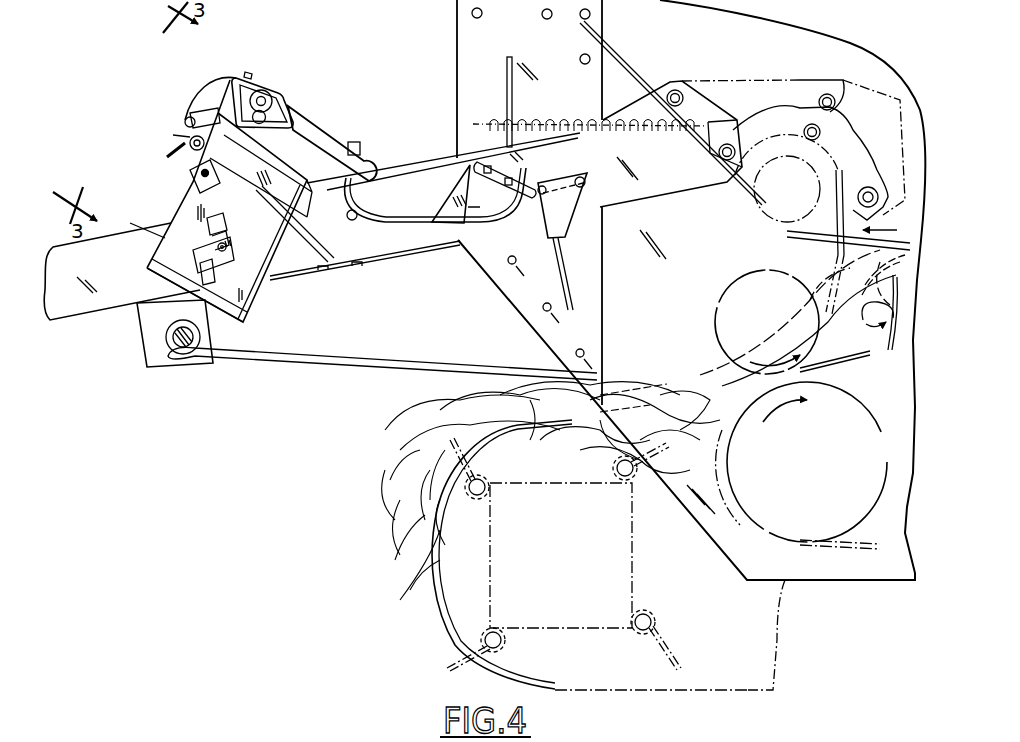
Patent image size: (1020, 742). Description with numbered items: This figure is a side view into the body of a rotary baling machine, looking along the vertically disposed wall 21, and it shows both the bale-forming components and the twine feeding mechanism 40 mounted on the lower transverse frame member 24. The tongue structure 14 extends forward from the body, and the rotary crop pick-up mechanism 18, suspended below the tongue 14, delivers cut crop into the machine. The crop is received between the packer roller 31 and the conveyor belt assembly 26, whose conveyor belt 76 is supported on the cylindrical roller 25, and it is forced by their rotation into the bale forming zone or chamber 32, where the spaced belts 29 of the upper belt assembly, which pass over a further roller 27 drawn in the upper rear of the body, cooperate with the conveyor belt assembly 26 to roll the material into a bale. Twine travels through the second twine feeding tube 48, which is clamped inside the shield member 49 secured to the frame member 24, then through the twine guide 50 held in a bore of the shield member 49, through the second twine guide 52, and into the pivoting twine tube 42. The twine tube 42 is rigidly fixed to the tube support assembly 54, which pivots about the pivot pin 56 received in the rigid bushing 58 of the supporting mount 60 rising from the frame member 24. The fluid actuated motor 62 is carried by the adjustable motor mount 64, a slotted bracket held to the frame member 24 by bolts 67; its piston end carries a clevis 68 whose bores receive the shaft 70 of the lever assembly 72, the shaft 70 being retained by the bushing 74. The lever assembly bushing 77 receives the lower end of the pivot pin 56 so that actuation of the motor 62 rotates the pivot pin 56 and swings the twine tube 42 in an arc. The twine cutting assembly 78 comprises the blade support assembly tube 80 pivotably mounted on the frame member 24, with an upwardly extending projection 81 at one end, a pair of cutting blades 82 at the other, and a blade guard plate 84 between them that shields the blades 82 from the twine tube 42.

The tongue structure 14 is at (97, 303).
The rotary crop pick-up mechanism 18 is at (427, 543).
The vertically disposed wall 21 is at (456, 27).
The lower transverse frame member 24 is at (299, 279).
The cylindrical roller 25 is at (832, 462).
The conveyor belt assembly 26 is at (737, 523).
The roller 27 is at (800, 201).
The spaced belts 29 is at (807, 227).
The packer roller 31 is at (775, 337).
The bale forming zone or chamber 32 is at (889, 340).
The twine feeding mechanism 40 is at (308, 120).
The pivoting twine tube 42 is at (336, 148).
The second twine feeding tube 48 is at (169, 150).
The shield member 49 is at (189, 140).
The twine guide 50 is at (185, 126).
The second twine guide 52 is at (259, 90).
The tube support assembly 54 is at (296, 100).
The pivot pin 56 is at (190, 186).
The rigid bushing 58 is at (214, 125).
The supporting mount 60 is at (273, 172).
The fluid actuated motor 62 is at (250, 320).
The adjustable motor mount 64 is at (279, 284).
The bolts 67 is at (357, 270).
The clevis 68 is at (192, 252).
The shaft 70 is at (197, 280).
The lever assembly 72 is at (192, 178).
The bushing 74 is at (208, 225).
The conveyor belt 76 is at (838, 551).
The lever assembly bushing 77 is at (200, 172).
The twine cutting assembly 78 is at (451, 223).
The blade support assembly tube 80 is at (417, 223).
The upwardly extending projection 81 is at (361, 148).
The cutting blades 82 is at (515, 164).
The blade guard plate 84 is at (448, 190).